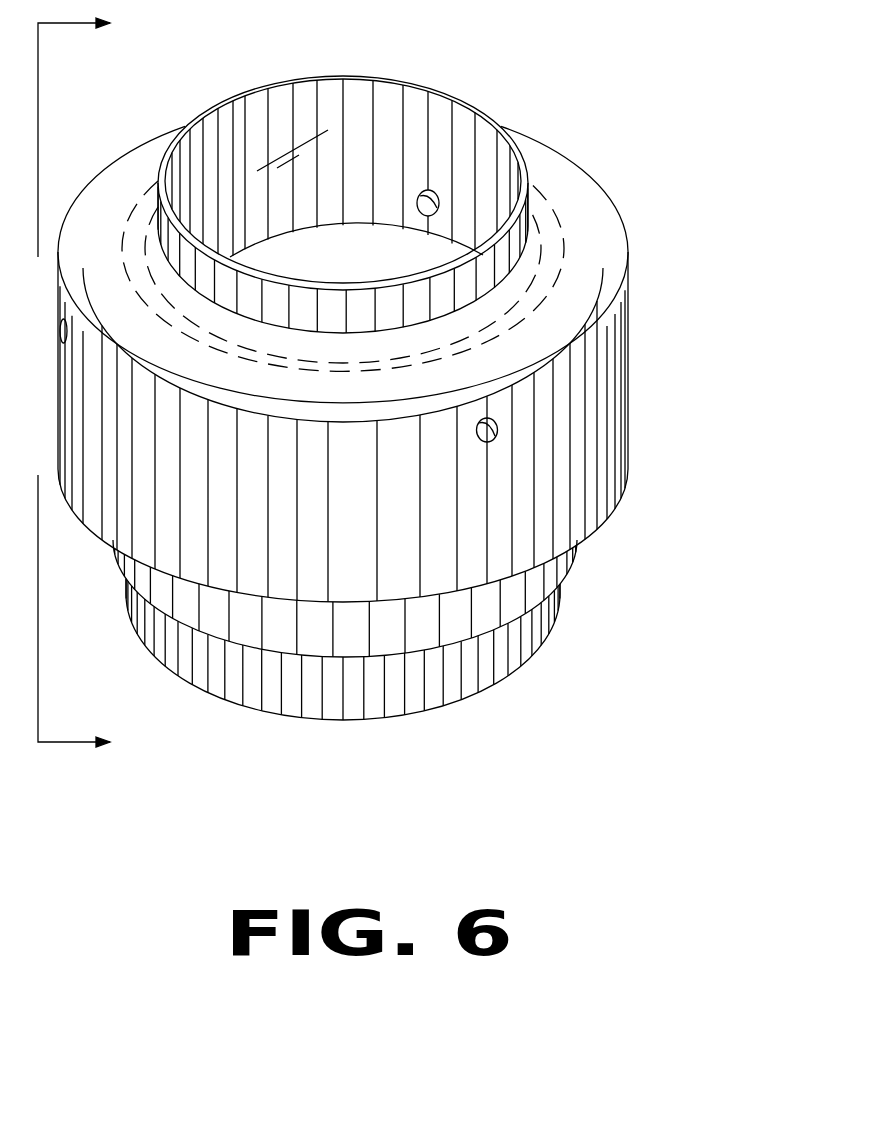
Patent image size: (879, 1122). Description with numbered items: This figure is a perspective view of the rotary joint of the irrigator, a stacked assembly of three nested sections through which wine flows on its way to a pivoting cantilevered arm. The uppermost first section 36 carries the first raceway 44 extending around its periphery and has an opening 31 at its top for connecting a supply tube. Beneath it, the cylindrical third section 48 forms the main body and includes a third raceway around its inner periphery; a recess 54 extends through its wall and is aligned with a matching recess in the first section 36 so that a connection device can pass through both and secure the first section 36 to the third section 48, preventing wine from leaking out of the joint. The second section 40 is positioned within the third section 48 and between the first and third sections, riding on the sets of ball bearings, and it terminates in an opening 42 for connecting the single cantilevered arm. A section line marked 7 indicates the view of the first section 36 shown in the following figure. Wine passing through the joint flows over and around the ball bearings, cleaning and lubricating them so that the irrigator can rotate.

The section line for FIG. 7 is at (88, 381).
The opening 31 is at (452, 94).
The first section 36 is at (620, 272).
The second section 40 is at (563, 617).
The opening 42 is at (463, 705).
The first raceway 44 is at (573, 218).
The third section 48 is at (630, 355).
The recess 54 is at (487, 438).